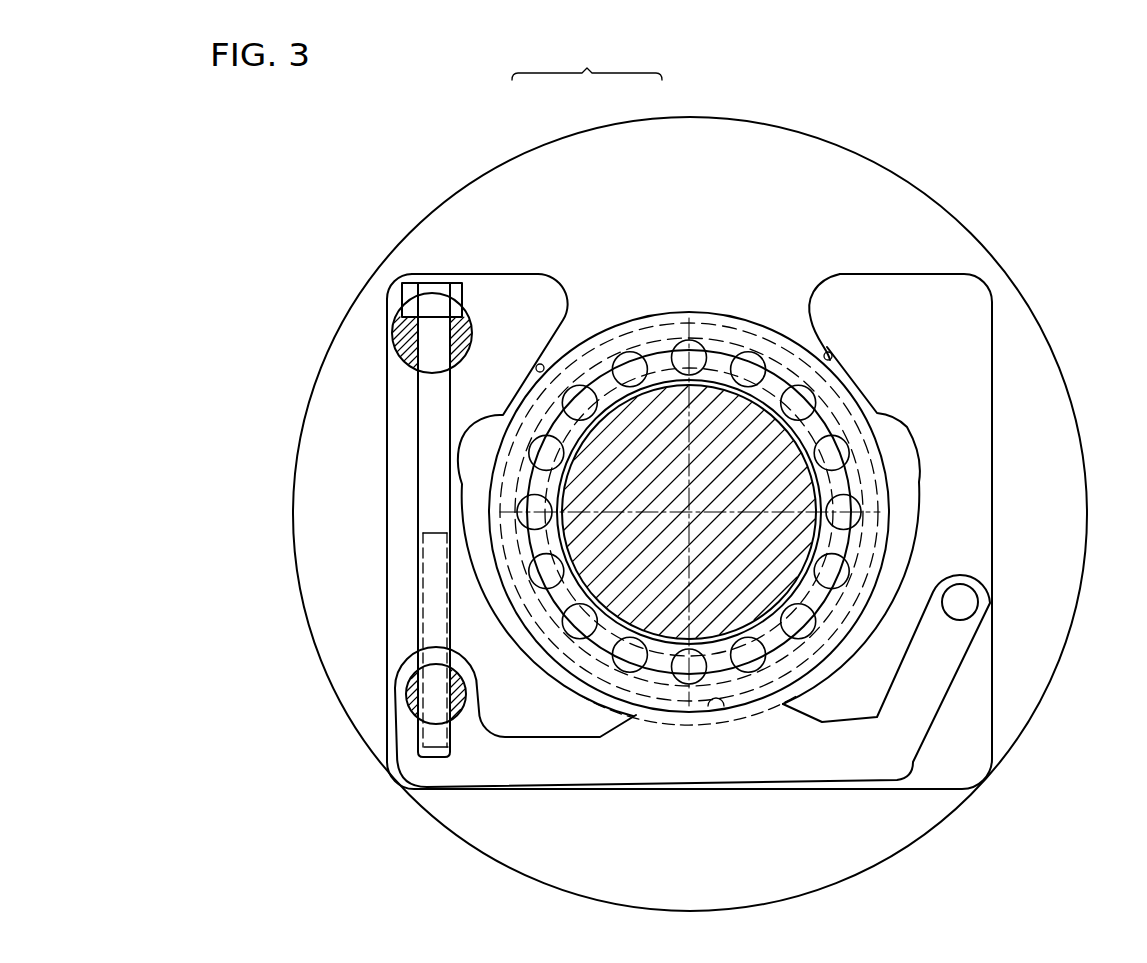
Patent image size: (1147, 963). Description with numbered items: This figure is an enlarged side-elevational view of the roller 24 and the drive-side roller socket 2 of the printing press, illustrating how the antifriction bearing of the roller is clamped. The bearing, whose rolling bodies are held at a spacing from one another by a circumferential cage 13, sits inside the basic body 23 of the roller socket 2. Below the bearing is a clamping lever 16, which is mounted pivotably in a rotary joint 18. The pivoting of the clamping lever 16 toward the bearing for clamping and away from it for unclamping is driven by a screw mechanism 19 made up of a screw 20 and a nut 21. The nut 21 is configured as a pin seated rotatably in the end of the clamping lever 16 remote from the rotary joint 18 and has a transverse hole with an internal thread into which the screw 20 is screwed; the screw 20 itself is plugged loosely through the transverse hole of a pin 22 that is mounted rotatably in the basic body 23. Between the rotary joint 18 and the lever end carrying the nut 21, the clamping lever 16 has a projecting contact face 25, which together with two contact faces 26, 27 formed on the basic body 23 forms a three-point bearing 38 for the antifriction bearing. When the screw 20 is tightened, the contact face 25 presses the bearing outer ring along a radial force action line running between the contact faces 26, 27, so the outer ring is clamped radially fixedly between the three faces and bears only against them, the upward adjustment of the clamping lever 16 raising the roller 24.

The roller socket 2 is at (594, 266).
The circumferential cage 13 is at (786, 353).
The clamping lever 16 is at (825, 763).
The rotary joint 18 is at (967, 602).
The screw mechanism 19 is at (400, 467).
The screw 20 is at (428, 600).
The nut 21 is at (406, 694).
The pin 22 is at (393, 332).
The basic body 23 is at (480, 274).
The roller 24 is at (798, 148).
The contact face 25 is at (724, 706).
The contact face 26 is at (540, 366).
The contact face 27 is at (833, 354).
The three-point bearing 38 is at (587, 62).